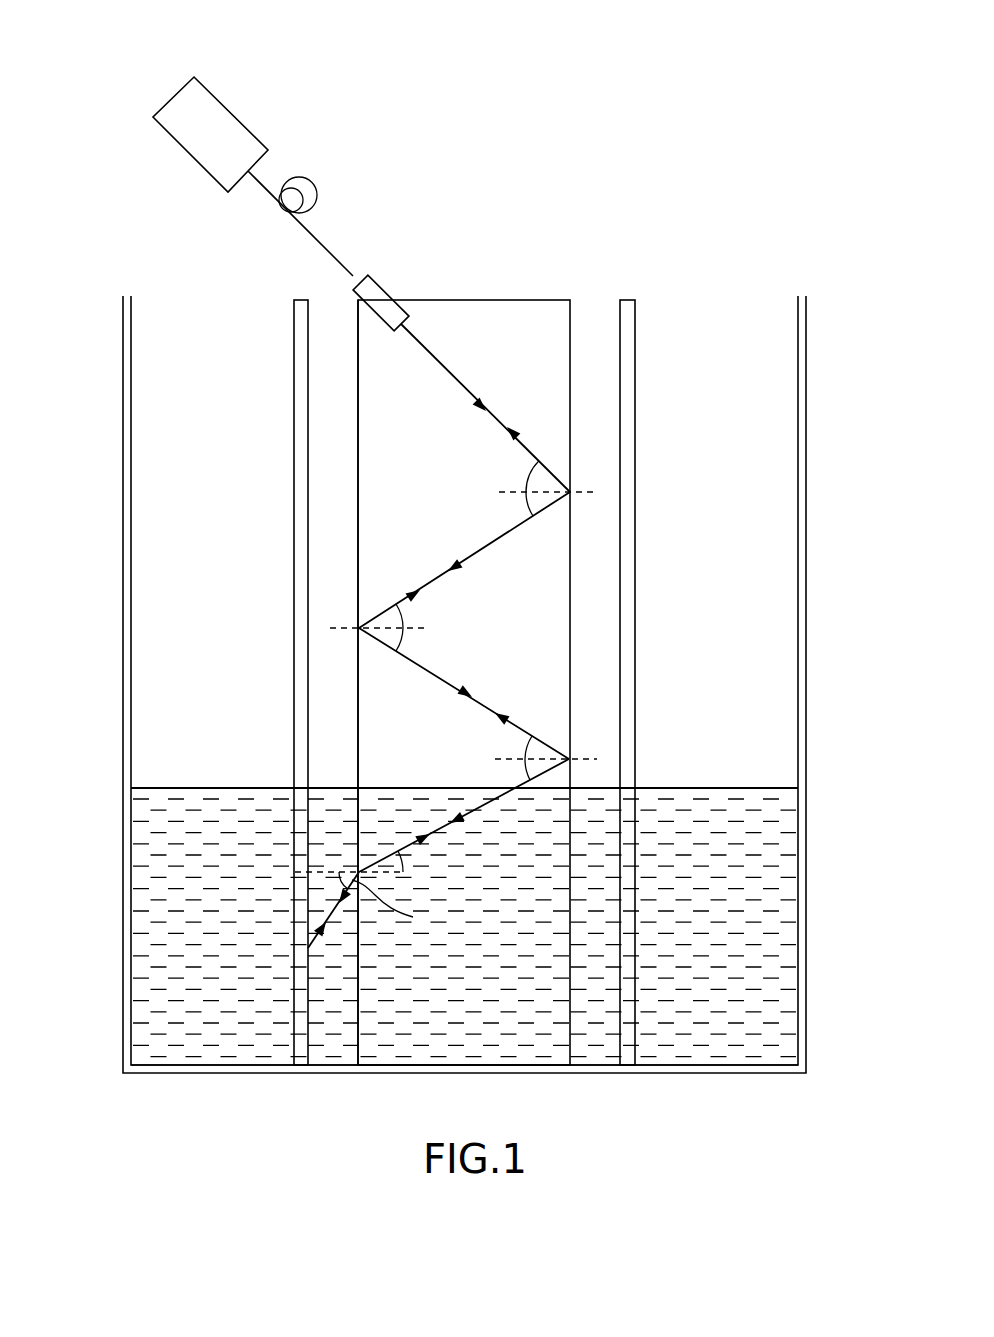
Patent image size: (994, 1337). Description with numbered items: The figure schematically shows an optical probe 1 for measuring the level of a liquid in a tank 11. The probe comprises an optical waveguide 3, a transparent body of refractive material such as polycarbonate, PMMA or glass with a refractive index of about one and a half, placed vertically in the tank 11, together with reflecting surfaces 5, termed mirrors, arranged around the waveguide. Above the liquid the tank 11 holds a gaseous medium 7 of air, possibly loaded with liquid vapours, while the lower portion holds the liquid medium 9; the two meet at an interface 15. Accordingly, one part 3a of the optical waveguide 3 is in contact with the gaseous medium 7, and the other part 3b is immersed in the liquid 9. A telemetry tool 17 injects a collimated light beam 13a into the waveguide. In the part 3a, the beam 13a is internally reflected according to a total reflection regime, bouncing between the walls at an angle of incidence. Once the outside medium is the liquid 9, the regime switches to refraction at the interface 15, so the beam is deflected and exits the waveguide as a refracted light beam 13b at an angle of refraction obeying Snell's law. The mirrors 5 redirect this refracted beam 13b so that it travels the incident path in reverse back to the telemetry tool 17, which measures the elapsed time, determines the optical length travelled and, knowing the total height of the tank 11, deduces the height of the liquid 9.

The optical probe 1 is at (260, 1033).
The optical waveguide 3 is at (542, 294).
The part of the optical waveguide 3a is at (326, 550).
The other part of the optical waveguide 3b is at (342, 841).
The reflecting surfaces 5 is at (300, 365).
The gaseous medium 7 is at (774, 630).
The liquid medium 9 is at (775, 933).
The tank 11 is at (826, 457).
The collimated light beam 13a is at (450, 373).
The refracted light beam 13b is at (341, 919).
The interface 15 is at (122, 786).
The telemetry tool 17 is at (310, 107).